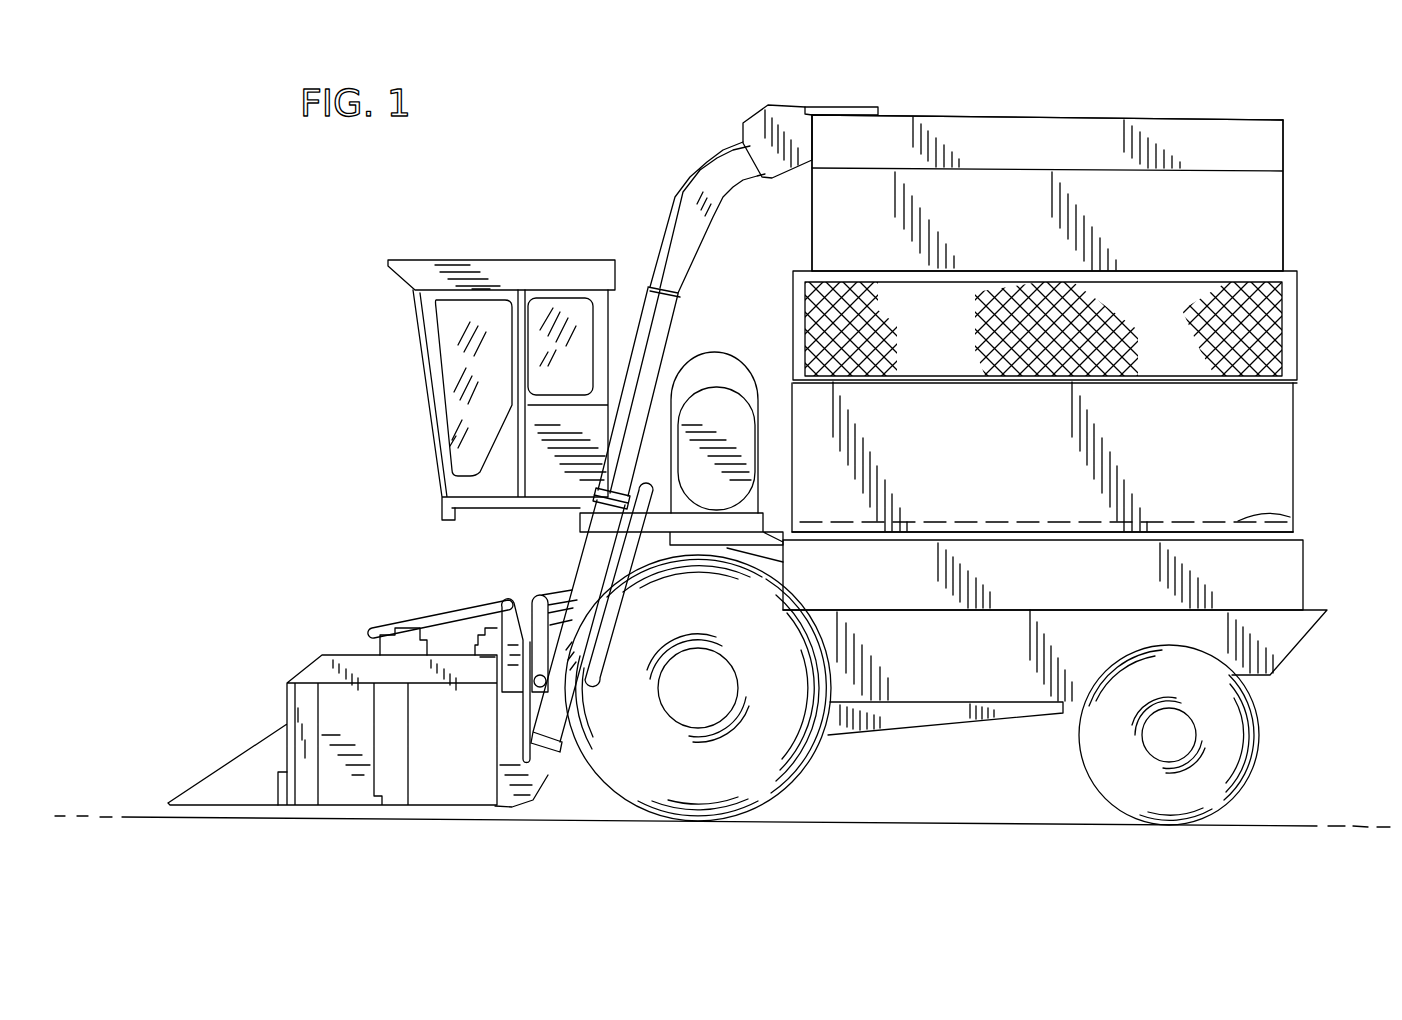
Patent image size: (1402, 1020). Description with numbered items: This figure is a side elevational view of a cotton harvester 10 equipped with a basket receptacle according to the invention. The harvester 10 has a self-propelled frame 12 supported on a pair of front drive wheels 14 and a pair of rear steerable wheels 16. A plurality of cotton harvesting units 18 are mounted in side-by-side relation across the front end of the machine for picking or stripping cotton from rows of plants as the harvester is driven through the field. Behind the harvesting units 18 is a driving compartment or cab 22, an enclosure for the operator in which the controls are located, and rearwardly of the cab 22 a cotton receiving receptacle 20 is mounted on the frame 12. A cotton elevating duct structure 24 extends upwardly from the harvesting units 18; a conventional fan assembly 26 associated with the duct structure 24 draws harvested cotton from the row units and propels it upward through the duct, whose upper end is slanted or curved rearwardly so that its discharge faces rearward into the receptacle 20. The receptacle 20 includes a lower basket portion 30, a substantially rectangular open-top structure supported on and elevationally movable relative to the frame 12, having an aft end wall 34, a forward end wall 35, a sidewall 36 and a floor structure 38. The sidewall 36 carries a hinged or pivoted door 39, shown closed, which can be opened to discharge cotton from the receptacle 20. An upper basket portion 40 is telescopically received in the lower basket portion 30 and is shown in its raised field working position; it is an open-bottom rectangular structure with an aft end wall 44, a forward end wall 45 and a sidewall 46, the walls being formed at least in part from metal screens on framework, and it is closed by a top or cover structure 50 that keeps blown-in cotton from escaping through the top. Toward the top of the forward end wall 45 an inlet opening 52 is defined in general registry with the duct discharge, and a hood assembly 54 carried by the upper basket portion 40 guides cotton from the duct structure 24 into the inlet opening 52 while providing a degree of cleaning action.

The cotton harvester 10 is at (542, 207).
The frame 12 is at (920, 715).
The front drive wheels 14 is at (763, 780).
The rear steerable wheels 16 is at (1208, 771).
The cotton harvesting units 18 is at (303, 660).
The cotton receiving receptacle 20 is at (795, 325).
The cab 22 is at (460, 415).
The duct structure 24 is at (579, 549).
The fan assembly 26 is at (673, 392).
The lower basket portion 30 is at (1246, 470).
The aft end wall 34 is at (1290, 506).
The forward end wall 35 is at (787, 407).
The sidewall 36 is at (1268, 425).
The floor structure 38 is at (1300, 515).
The door 39 is at (992, 471).
The upper basket portion 40 is at (843, 243).
The aft end wall 44 is at (1285, 264).
The forward end wall 45 is at (812, 196).
The sidewall 46 is at (1265, 222).
The top or cover structure 50 is at (1180, 114).
The inlet opening 52 is at (813, 152).
The hood assembly 54 is at (743, 109).